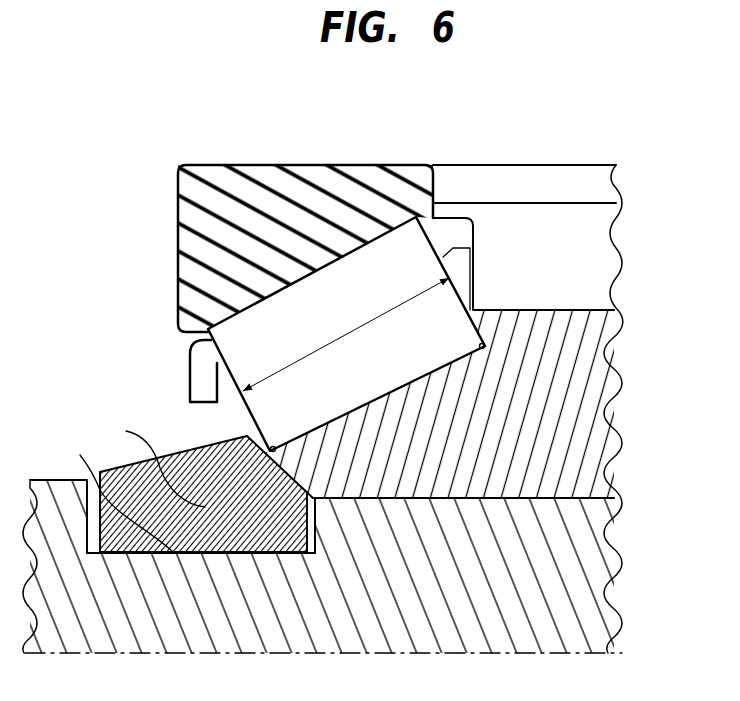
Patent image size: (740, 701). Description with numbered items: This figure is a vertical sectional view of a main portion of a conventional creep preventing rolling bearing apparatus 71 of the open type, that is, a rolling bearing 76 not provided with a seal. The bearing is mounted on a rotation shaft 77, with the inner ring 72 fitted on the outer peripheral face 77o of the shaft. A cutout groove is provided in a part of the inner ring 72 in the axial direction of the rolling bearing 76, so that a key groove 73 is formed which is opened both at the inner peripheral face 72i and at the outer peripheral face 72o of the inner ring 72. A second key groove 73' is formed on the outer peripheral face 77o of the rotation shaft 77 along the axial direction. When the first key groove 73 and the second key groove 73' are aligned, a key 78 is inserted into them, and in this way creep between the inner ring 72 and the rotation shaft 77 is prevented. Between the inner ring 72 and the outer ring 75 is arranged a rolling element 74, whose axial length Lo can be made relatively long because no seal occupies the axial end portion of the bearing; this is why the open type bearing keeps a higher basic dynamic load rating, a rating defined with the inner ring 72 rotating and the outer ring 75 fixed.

The creep preventing rolling bearing apparatus 71 is at (88, 284).
The inner ring 72 is at (463, 420).
The outer peripheral face of the inner ring 72o is at (257, 490).
The inner peripheral face of the inner ring 72i is at (407, 505).
The key groove 73 is at (206, 469).
The second key groove 73' is at (115, 490).
The rolling element 74 is at (378, 288).
The outer ring 75 is at (248, 225).
The rolling bearing 76 is at (645, 344).
The rotation shaft 77 is at (453, 583).
The outer peripheral face of the rotation shaft 77o is at (450, 493).
The key 78 is at (151, 460).